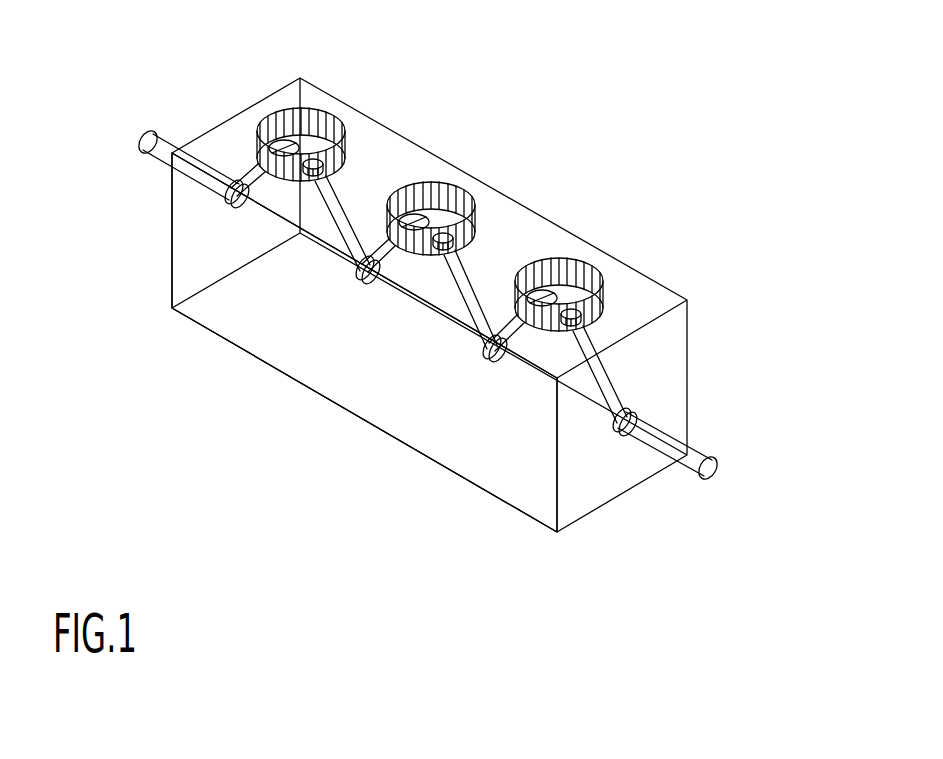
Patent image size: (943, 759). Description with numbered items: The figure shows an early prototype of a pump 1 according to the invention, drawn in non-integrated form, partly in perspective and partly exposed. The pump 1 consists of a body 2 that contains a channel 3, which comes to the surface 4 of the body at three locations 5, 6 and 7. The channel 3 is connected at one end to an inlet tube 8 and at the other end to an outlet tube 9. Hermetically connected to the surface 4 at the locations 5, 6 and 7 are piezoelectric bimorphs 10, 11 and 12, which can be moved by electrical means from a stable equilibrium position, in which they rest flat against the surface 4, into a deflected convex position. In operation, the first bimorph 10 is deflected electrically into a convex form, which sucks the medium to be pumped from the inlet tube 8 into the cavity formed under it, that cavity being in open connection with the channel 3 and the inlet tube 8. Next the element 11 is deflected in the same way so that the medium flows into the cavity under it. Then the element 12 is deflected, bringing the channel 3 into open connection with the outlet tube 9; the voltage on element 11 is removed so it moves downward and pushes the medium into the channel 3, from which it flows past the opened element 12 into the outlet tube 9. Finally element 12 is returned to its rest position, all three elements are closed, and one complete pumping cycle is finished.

The pump 1 is at (323, 405).
The body 2 is at (323, 342).
The channel 3 is at (338, 217).
The surface 4 is at (460, 295).
The first location 5 is at (567, 290).
The second location 6 is at (447, 218).
The third location 7 is at (310, 138).
The inlet tube 8 is at (157, 125).
The outlet tube 9 is at (717, 493).
The first piezoelectric bimorph 10 is at (355, 155).
The second piezoelectric bimorph 11 is at (473, 248).
The third piezoelectric bimorph 12 is at (613, 308).